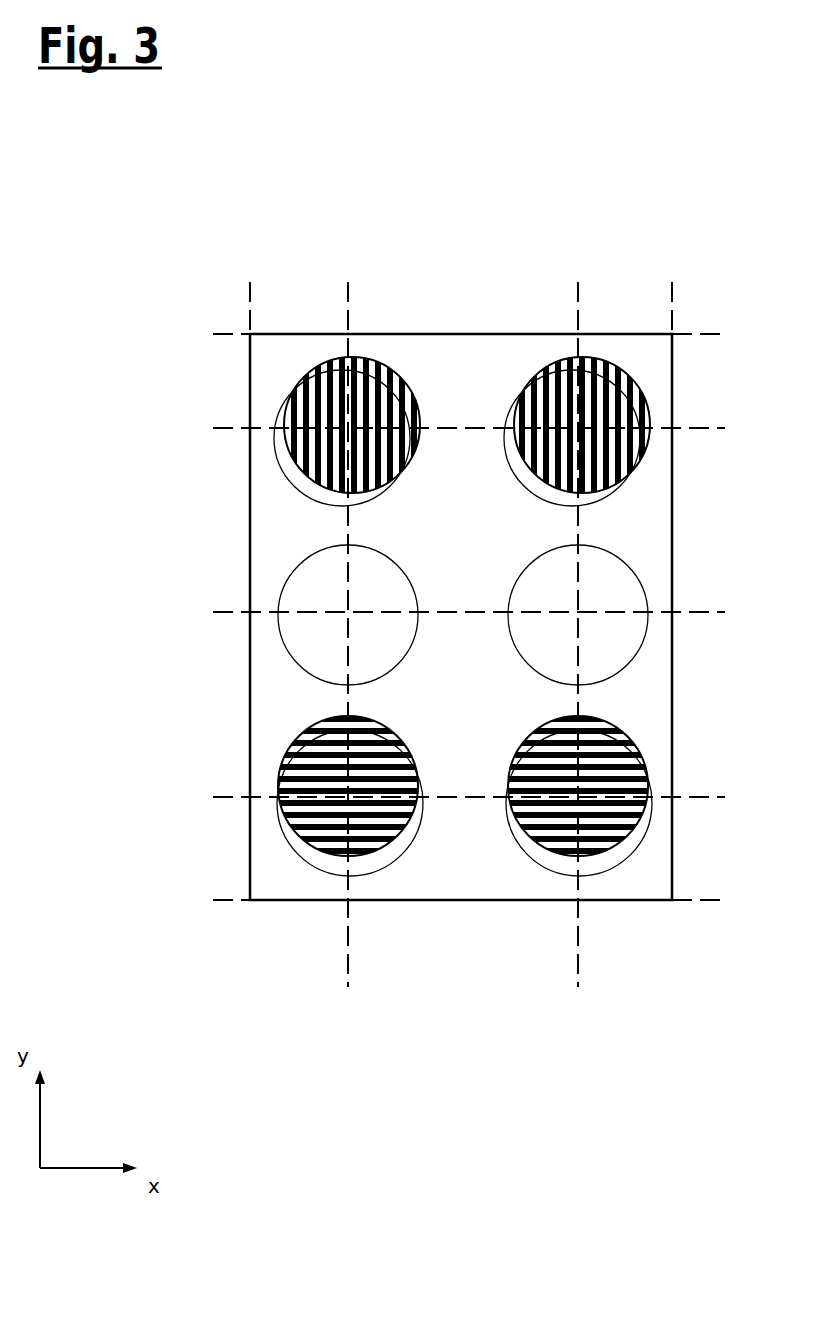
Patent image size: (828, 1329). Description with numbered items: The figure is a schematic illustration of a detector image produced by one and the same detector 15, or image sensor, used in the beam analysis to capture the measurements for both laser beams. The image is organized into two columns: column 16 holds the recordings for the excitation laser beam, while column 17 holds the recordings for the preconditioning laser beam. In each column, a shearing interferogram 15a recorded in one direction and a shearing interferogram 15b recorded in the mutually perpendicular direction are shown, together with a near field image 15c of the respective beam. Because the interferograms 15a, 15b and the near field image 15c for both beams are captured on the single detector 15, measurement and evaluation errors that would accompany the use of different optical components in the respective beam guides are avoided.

The detector 15 is at (455, 230).
The shearing interferogram 15a is at (130, 425).
The shearing interferogram 15b is at (120, 791).
The near field image 15c is at (120, 606).
The column 16 is at (352, 1037).
The column 17 is at (585, 1030).